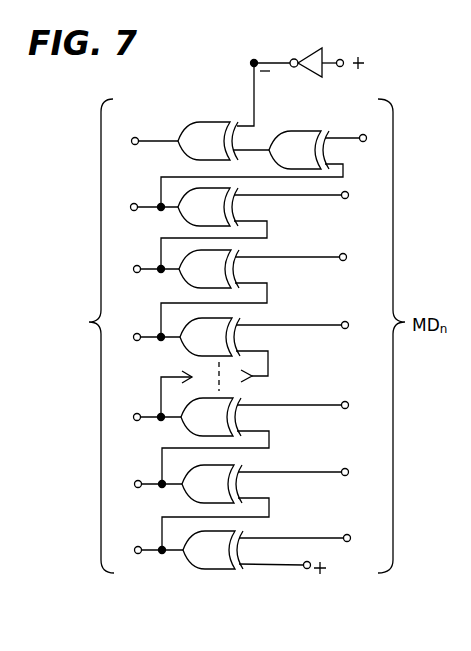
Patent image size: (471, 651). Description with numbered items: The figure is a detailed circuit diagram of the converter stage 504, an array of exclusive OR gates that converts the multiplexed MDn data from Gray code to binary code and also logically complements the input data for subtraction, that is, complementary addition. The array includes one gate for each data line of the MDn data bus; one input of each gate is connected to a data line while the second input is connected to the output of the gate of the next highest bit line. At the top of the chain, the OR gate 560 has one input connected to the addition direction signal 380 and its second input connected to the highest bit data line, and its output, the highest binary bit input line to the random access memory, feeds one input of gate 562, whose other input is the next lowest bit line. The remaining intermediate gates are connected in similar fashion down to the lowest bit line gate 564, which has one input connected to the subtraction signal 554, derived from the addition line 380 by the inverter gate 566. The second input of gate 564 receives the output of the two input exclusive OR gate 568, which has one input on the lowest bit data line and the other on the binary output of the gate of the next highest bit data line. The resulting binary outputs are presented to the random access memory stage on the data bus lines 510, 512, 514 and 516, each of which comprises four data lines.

The converter stage 504 is at (166, 99).
The subtraction signal 554 is at (254, 62).
The inverter gate 566 is at (307, 49).
The add signal 380 is at (341, 59).
The lowest bit line gate 564 is at (201, 141).
The two input exclusive OR gate 568 is at (264, 169).
The data bus line 510 is at (192, 245).
The data bus line 512 is at (191, 293).
The data bus line 514 is at (192, 367).
The data bus line 516 is at (192, 426).
The gate 562 is at (242, 507).
The OR gate 560 is at (243, 550).